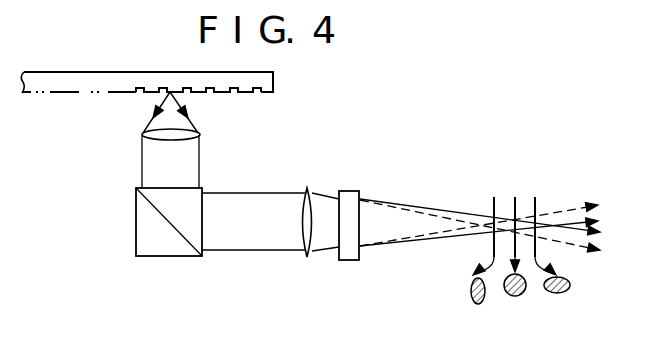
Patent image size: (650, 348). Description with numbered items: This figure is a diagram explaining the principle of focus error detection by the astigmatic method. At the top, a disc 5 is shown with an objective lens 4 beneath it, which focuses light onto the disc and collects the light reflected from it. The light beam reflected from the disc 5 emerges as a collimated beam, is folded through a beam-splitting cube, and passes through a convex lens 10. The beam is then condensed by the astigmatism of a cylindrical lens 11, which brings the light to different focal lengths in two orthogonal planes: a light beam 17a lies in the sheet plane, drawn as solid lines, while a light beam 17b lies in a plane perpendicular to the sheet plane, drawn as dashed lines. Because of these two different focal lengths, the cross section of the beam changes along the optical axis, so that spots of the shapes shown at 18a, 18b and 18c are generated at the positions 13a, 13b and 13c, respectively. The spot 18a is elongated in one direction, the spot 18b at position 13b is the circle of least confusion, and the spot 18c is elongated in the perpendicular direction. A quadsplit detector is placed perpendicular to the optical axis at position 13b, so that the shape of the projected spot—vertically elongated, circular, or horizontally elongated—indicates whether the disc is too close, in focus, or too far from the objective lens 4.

The objective lens 4 is at (142, 136).
The disc 5 is at (275, 80).
The convex lens 10 is at (306, 258).
The cylindrical lens 11 is at (351, 261).
The position 13a is at (499, 194).
The position 13b is at (521, 194).
The position 13c is at (535, 203).
The light beam 17a is at (433, 208).
The light beam 17b is at (421, 237).
The spot 18a is at (478, 304).
The spot 18b is at (518, 296).
The spot 18c is at (558, 293).